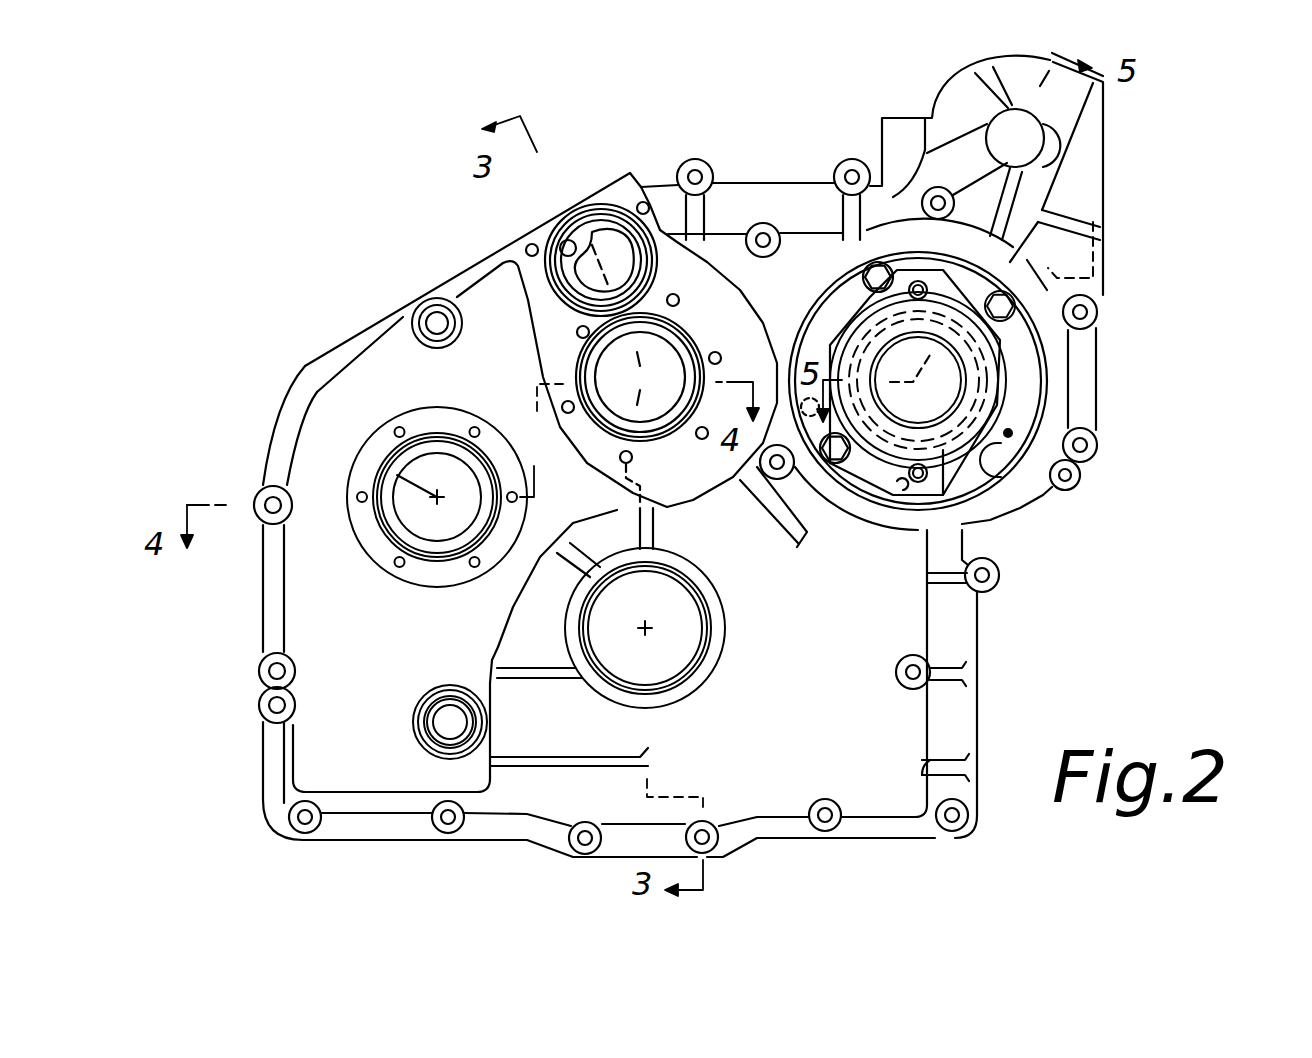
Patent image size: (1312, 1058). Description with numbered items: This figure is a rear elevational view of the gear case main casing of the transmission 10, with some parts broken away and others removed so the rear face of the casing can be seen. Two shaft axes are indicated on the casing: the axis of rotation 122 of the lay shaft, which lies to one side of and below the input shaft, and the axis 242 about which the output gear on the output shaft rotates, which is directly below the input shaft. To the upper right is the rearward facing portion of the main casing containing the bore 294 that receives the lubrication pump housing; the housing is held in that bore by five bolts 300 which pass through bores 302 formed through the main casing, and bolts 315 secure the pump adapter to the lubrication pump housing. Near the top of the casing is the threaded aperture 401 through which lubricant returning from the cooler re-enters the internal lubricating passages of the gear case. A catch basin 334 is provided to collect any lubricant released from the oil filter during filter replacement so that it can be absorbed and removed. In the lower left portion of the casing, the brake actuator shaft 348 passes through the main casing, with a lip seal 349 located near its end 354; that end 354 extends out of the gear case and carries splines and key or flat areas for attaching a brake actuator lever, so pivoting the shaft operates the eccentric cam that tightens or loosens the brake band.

The transmission 10 is at (448, 269).
The threaded aperture 401 is at (432, 307).
The axis of rotation 122 is at (387, 463).
The axis 242 is at (650, 632).
The bores 302 is at (1015, 340).
The bolts 315 is at (995, 291).
The catch basin 334 is at (1098, 273).
The bore 294 is at (1027, 420).
The bolts 300 is at (1011, 438).
The lip seal 349 is at (455, 687).
The end of the brake actuator shaft 354 is at (423, 713).
The brake actuator shaft 348 is at (440, 727).